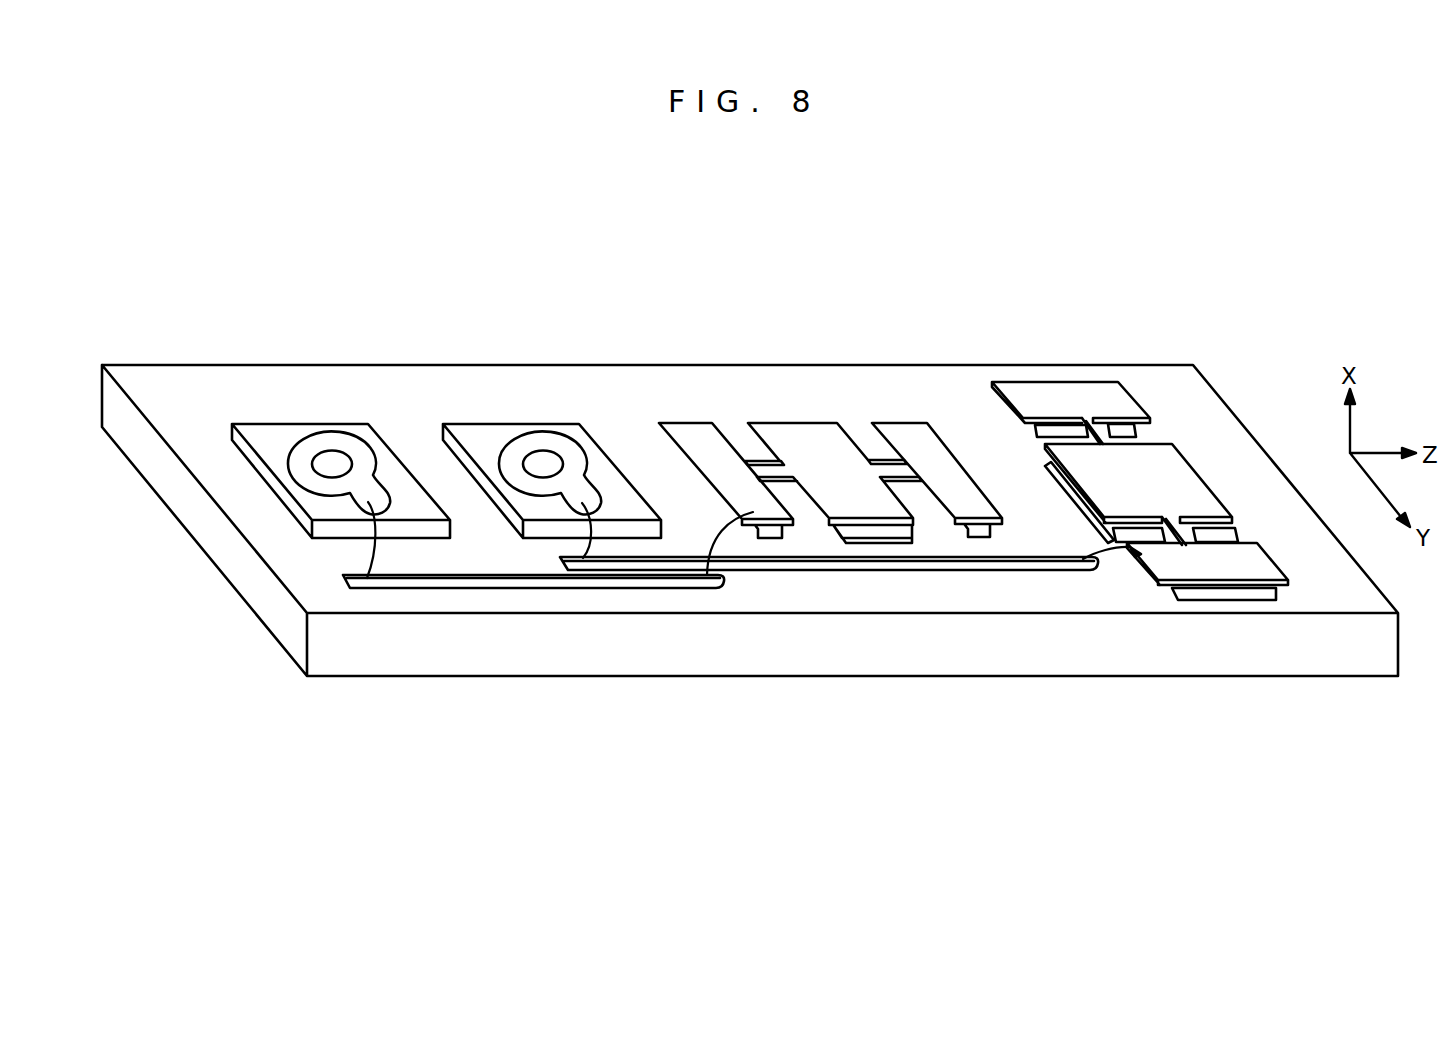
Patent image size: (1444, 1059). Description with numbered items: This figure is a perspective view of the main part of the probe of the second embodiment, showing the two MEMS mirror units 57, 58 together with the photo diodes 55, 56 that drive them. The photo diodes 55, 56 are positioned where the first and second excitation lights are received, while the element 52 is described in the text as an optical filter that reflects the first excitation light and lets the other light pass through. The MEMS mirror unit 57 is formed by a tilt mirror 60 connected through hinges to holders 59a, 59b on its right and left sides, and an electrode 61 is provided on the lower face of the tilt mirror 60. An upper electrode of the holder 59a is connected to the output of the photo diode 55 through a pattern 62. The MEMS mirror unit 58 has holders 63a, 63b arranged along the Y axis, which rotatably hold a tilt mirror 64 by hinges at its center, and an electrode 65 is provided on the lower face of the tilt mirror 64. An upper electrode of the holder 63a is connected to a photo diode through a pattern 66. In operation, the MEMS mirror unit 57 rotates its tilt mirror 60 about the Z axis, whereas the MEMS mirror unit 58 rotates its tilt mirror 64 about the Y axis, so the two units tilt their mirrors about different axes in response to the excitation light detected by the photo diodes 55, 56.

The optical filter 52 is at (608, 658).
The photo diode 55 is at (271, 433).
The photo diode 56 is at (488, 432).
The MEMS mirror unit 57 is at (1003, 288).
The MEMS mirror unit 58 is at (1380, 749).
The holder 59a is at (684, 432).
The holder 59b is at (917, 431).
The tilt mirror 60 is at (778, 432).
The electrode 61 is at (867, 530).
The pattern 62 is at (490, 590).
The holder 63a is at (1202, 560).
The holder 63b is at (1033, 393).
The tilt mirror 64 is at (1175, 460).
The electrode 65 is at (1130, 530).
The pattern 66 is at (802, 572).